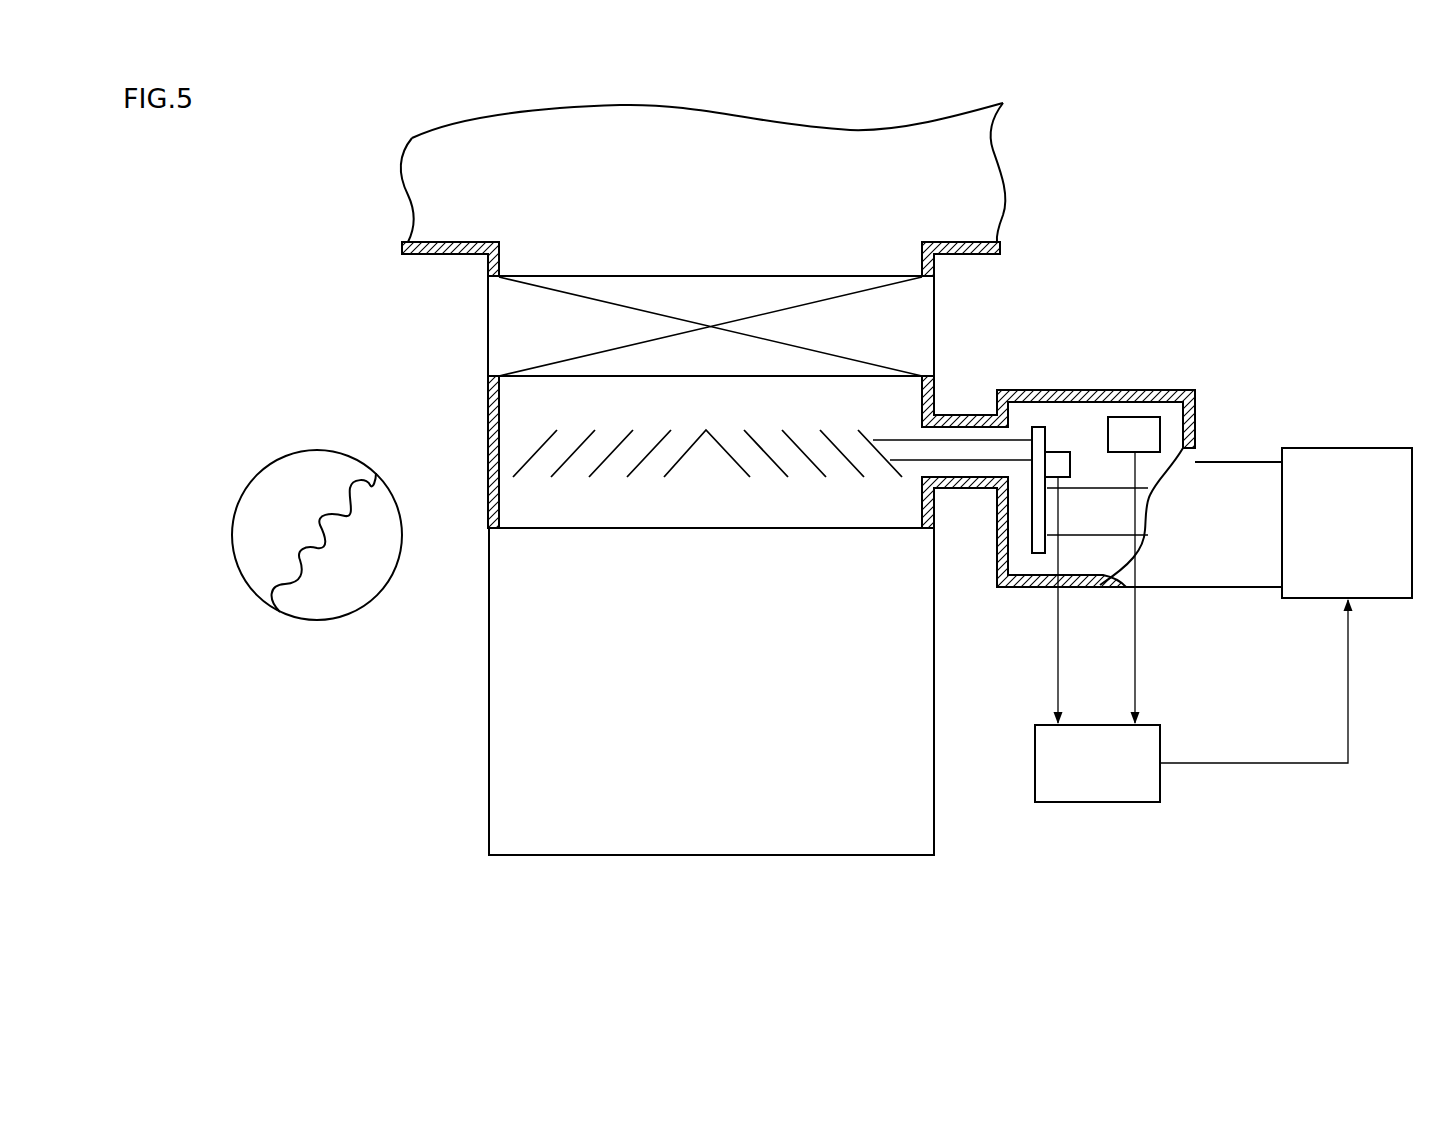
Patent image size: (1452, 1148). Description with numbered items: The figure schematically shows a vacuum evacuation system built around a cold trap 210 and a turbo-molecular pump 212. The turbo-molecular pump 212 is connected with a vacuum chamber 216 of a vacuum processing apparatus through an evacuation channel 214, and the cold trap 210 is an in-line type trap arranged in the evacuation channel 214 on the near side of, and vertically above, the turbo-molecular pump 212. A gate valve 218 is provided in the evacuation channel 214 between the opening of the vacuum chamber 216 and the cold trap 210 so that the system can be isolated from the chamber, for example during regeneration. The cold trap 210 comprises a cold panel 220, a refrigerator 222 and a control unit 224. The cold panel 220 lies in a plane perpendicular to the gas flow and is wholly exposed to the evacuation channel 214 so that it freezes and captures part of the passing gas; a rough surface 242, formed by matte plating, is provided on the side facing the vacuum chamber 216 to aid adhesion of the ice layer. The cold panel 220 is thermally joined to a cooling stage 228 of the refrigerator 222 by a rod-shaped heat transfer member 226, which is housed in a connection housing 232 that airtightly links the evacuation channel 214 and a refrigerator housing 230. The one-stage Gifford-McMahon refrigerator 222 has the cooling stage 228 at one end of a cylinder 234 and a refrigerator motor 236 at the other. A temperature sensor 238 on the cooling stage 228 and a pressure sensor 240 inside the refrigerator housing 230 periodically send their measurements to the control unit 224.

The cold trap 210 is at (531, 433).
The turbo-molecular pump 212 is at (489, 693).
The evacuation channel 214 is at (488, 486).
The vacuum chamber 216 is at (423, 198).
The gate valve 218 is at (499, 327).
The cold panel 220 is at (822, 436).
The refrigerator 222 is at (1231, 452).
The control unit 224 is at (1098, 802).
The heat transfer member 226 is at (967, 452).
The cooling stage 228 is at (1037, 553).
The refrigerator housing 230 is at (1033, 395).
The connection housing 232 is at (960, 421).
The cylinder 234 is at (1087, 540).
The refrigerator motor 236 is at (1360, 448).
The temperature sensor 238 is at (1062, 452).
The pressure sensor 240 is at (1139, 417).
The rough surface 242 is at (308, 547).